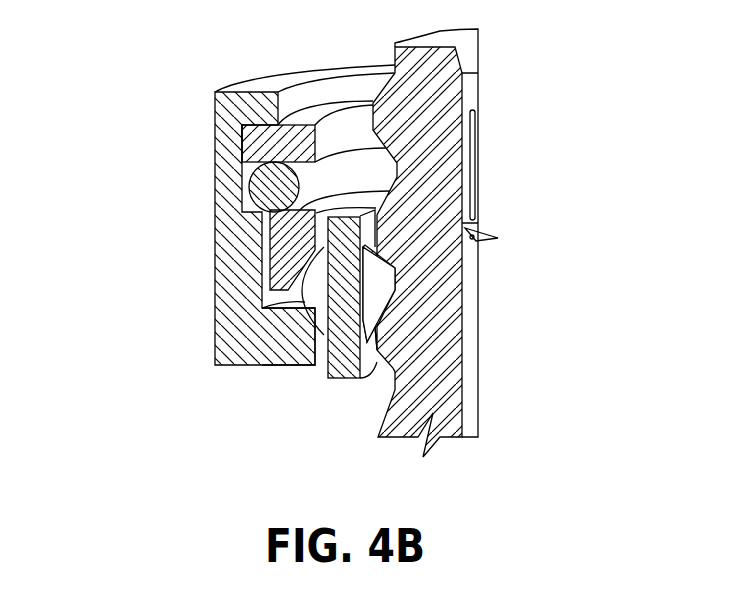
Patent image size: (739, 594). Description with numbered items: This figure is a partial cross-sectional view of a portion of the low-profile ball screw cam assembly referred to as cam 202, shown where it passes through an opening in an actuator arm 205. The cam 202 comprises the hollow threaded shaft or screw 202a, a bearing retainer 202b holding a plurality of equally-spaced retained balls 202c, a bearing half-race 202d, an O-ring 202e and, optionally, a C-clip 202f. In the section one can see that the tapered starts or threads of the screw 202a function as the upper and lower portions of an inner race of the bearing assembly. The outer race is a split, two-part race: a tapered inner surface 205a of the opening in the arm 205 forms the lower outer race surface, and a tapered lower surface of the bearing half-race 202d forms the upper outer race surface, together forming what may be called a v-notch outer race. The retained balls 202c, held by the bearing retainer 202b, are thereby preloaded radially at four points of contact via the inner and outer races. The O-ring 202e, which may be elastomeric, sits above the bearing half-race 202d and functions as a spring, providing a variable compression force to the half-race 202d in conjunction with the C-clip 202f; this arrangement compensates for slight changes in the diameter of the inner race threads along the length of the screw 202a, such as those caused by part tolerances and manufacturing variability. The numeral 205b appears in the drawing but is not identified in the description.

The cam 202 is at (112, 44).
The screw 202a is at (412, 427).
The bearing retainer 202b is at (347, 368).
The retained balls 202c is at (296, 312).
The bearing half-race 202d is at (293, 262).
The O-ring 202e is at (262, 193).
The C-clip 202f is at (256, 143).
The actuator arm 205 is at (233, 333).
The tapered inner surface 205a is at (300, 320).
The seal ring 205b is at (256, 128).